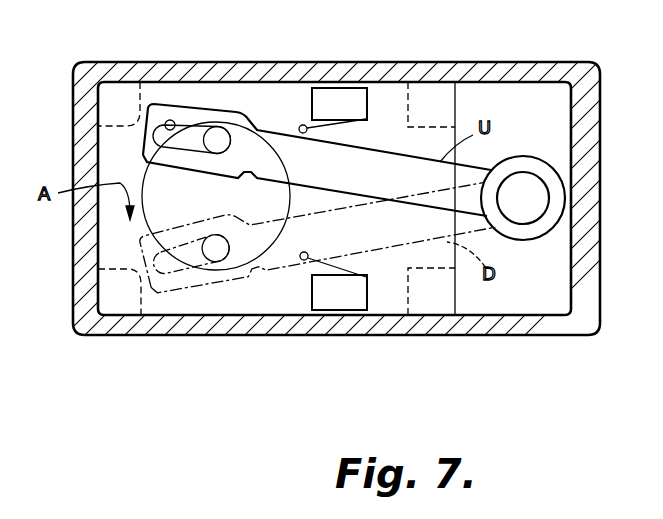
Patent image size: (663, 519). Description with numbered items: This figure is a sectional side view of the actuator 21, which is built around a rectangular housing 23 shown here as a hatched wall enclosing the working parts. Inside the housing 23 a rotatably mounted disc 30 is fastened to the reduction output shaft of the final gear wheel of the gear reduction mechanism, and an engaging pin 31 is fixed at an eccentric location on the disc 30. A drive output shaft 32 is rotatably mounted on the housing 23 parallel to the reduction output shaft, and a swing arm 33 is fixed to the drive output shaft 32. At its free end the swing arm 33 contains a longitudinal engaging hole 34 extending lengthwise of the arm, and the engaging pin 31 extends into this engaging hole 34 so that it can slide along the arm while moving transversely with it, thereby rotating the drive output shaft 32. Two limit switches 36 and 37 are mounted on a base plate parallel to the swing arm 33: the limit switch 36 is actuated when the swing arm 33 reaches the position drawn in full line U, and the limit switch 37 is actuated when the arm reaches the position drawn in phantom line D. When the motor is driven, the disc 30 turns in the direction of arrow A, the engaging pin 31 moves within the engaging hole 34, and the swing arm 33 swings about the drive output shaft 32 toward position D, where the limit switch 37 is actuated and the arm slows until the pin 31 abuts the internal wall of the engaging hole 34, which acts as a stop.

The actuator 21 is at (104, 54).
The rectangular housing 23 is at (78, 94).
The rotatably mounted disc 30 is at (140, 222).
The engaging pin 31 is at (220, 138).
The drive output shaft 32 is at (533, 203).
The swing arm 33 is at (390, 132).
The longitudinal engaging hole 34 is at (175, 124).
The limit switch 36 is at (357, 100).
The limit switch 37 is at (362, 293).